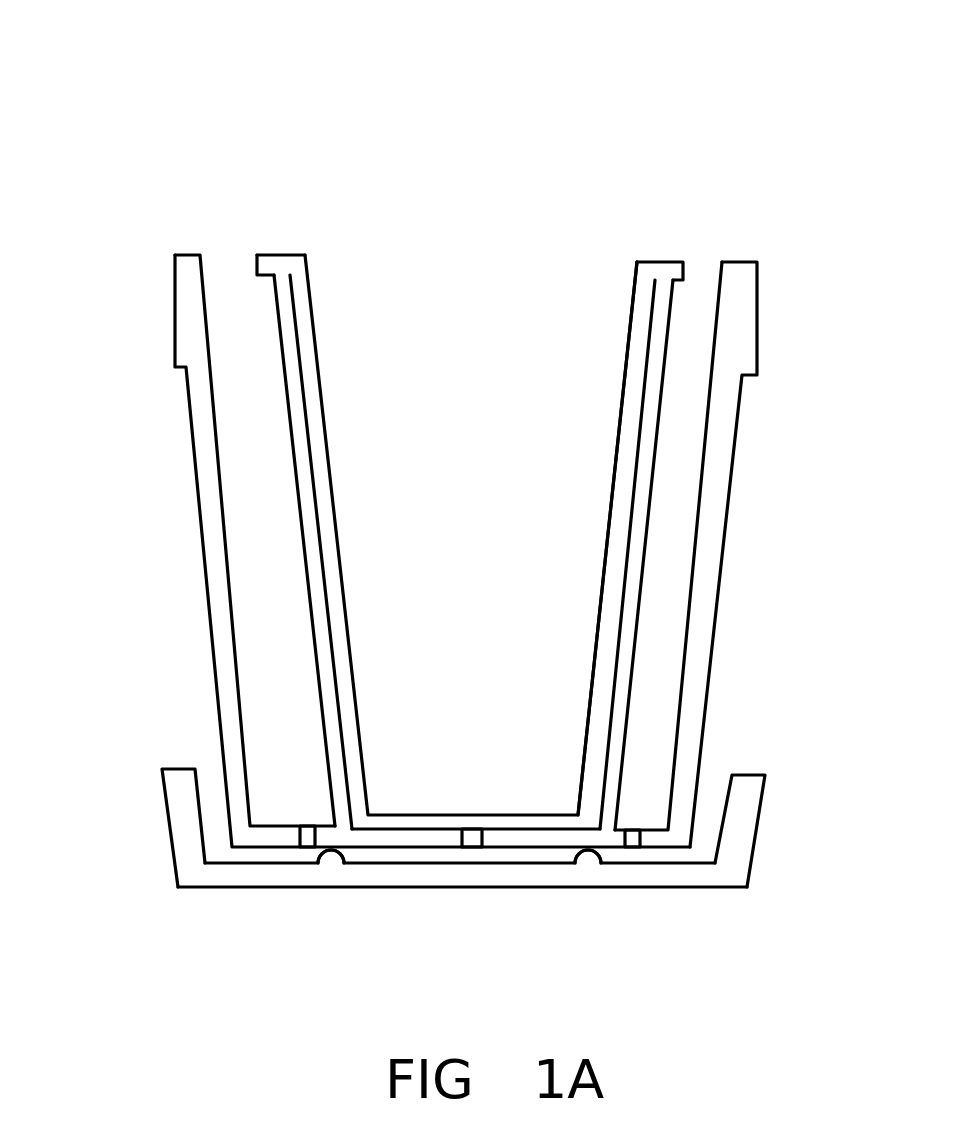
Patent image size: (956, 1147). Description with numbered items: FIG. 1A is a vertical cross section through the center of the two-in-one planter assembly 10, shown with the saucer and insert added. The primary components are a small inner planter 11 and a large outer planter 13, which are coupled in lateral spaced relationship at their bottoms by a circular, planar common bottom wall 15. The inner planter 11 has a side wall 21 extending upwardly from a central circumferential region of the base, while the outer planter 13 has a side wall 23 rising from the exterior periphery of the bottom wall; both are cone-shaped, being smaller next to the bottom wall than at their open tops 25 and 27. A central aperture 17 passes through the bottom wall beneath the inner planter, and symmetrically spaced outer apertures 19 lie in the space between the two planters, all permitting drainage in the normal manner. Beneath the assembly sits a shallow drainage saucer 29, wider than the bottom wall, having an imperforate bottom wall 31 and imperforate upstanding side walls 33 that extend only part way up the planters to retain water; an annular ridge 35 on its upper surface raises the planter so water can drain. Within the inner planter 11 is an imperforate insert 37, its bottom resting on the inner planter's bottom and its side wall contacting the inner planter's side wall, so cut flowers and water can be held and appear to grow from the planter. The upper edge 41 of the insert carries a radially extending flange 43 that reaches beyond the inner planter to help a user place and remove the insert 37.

The planter assembly 10 is at (683, 130).
The inner planter 11 is at (673, 325).
The outer planter 13 is at (725, 460).
The common bottom wall 15 is at (603, 838).
The central aperture 17 is at (482, 838).
The outer apertures 19 is at (298, 844).
The side wall of inner planter 21 is at (634, 565).
The side wall of outer planter 23 is at (695, 663).
The open top of inner planter 25 is at (275, 310).
The open top of outer planter 27 is at (182, 255).
The drainage saucer 29 is at (762, 845).
The bottom wall of saucer 31 is at (552, 877).
The side walls of saucer 33 is at (187, 838).
The annular ridge 35 is at (345, 852).
The insert 37 is at (625, 362).
The upper edge of insert 41 is at (287, 255).
The radially extending flange 43 is at (255, 266).